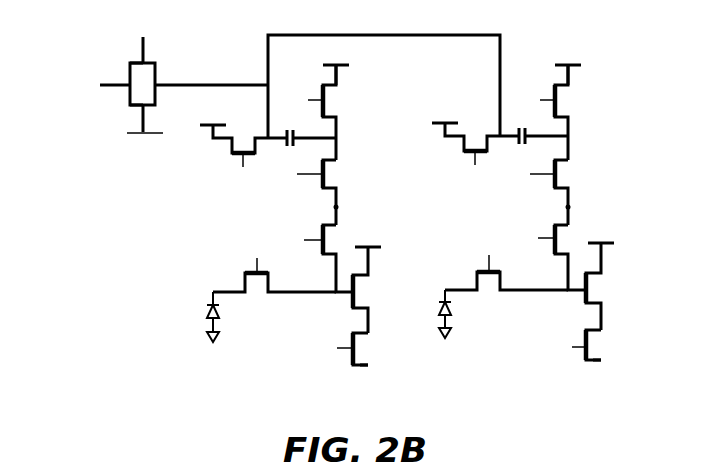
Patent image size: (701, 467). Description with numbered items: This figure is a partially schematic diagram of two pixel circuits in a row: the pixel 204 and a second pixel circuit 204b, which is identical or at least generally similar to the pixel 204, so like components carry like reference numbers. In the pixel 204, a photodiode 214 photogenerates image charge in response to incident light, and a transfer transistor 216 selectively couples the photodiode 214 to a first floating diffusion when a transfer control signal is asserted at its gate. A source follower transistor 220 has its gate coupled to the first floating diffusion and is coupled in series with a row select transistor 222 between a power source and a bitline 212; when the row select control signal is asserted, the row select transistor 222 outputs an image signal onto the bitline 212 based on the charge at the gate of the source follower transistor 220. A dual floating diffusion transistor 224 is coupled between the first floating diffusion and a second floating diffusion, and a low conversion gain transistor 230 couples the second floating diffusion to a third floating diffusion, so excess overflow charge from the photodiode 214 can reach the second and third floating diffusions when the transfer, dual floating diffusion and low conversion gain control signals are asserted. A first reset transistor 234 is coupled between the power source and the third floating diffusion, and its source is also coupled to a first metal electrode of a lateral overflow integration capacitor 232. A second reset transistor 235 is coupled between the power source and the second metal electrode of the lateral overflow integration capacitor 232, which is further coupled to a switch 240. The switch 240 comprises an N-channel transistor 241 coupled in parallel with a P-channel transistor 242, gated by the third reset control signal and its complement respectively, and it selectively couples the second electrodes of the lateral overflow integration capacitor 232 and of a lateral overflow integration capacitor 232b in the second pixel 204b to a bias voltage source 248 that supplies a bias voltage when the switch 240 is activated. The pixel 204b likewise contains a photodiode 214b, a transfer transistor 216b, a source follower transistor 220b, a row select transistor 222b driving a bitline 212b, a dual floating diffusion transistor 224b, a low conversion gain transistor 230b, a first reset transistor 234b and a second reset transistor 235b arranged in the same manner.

The pixel circuit 204 is at (362, 93).
The second pixel circuit 204b is at (597, 93).
The bitline 212 is at (368, 367).
The bitline 212b is at (601, 362).
The photodiode 214 is at (210, 305).
The photodiode 214b is at (443, 302).
The transfer transistor 216 is at (244, 285).
The transfer transistor 216b is at (476, 284).
The source follower transistor 220 is at (362, 307).
The source follower transistor 220b is at (596, 304).
The row select transistor 222 is at (357, 366).
The row select transistor 222b is at (592, 362).
The dual floating diffusion transistor 224 is at (332, 256).
The dual floating diffusion transistor 224b is at (564, 255).
The low conversion gain transistor 230 is at (328, 190).
The low conversion gain transistor 230b is at (562, 189).
The lateral overflow integration capacitor 232 is at (288, 146).
The lateral overflow integration capacitor 232b is at (521, 144).
The first reset transistor 234 is at (332, 83).
The first reset transistor 234b is at (565, 82).
The second reset transistor 235 is at (230, 151).
The second reset transistor 235b is at (462, 149).
The switch 240 is at (173, 56).
The N-channel transistor 241 is at (129, 66).
The P-channel transistor 242 is at (128, 103).
The bias voltage source 248 is at (60, 58).